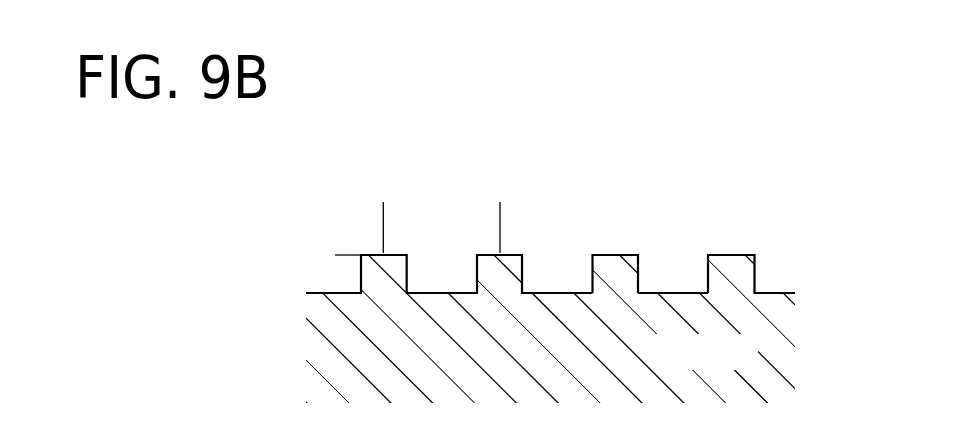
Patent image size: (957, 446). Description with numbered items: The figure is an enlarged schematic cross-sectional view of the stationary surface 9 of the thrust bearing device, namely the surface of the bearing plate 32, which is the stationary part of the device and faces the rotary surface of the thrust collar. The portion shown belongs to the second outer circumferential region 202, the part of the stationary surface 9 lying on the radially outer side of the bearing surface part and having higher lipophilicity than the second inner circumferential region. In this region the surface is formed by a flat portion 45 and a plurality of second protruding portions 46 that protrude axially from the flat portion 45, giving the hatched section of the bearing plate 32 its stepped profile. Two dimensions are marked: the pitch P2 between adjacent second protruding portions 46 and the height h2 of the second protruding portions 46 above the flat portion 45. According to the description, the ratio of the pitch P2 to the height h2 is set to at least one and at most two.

The stationary surface 9 is at (570, 230).
The bearing plate 32 is at (541, 323).
The second outer circumferential region 202 is at (747, 365).
The flat portion 45 is at (665, 293).
The second protruding portions 46 is at (618, 255).
The pitch of the second protruding portions P2 is at (500, 213).
The height of the second protruding portions h2 is at (341, 255).